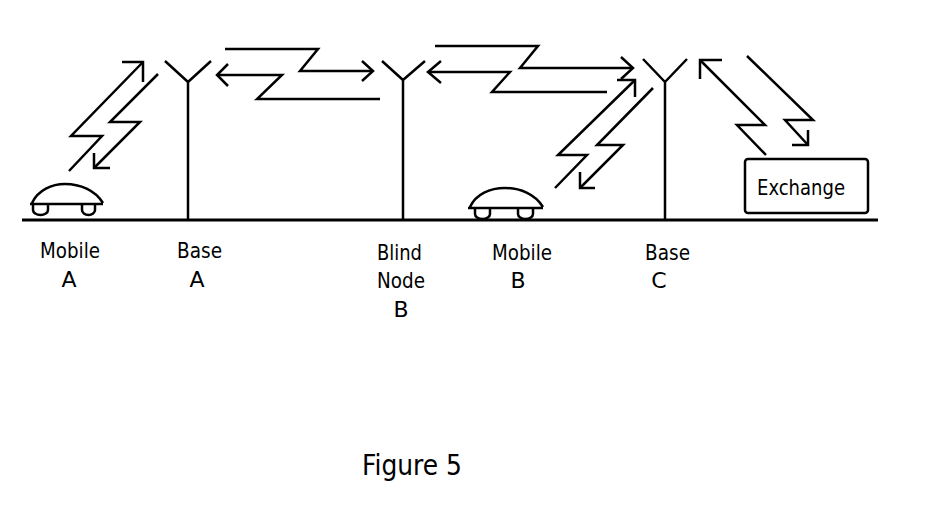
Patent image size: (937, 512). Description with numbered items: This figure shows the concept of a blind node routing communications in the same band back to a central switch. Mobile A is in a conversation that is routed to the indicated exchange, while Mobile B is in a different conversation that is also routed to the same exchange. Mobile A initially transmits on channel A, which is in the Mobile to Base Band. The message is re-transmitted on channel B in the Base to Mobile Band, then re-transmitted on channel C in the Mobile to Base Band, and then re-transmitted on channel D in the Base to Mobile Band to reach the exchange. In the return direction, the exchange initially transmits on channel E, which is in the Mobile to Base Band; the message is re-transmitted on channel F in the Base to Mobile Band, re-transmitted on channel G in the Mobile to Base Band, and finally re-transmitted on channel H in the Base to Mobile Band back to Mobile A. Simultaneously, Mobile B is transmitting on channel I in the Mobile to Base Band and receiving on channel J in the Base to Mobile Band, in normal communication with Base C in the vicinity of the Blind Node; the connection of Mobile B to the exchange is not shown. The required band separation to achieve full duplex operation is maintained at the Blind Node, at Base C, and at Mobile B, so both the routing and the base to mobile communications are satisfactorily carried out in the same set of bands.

The channel A is at (106, 116).
The channel B is at (299, 50).
The channel C is at (534, 53).
The channel D is at (780, 99).
The channel E is at (730, 107).
The channel F is at (517, 86).
The channel G is at (298, 97).
The channel H is at (134, 121).
The channel I is at (580, 134).
The channel J is at (616, 138).